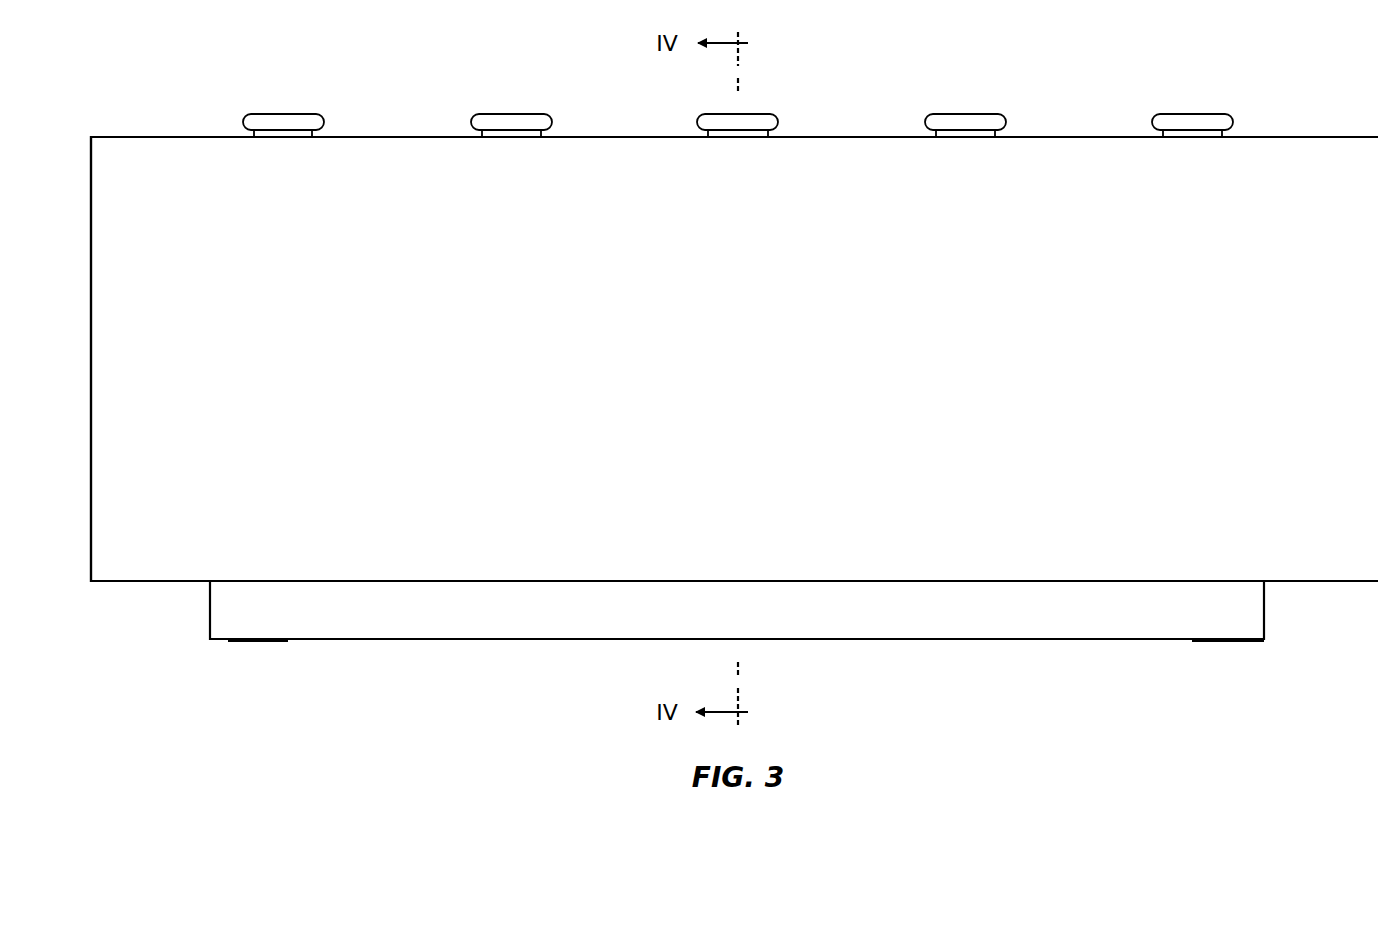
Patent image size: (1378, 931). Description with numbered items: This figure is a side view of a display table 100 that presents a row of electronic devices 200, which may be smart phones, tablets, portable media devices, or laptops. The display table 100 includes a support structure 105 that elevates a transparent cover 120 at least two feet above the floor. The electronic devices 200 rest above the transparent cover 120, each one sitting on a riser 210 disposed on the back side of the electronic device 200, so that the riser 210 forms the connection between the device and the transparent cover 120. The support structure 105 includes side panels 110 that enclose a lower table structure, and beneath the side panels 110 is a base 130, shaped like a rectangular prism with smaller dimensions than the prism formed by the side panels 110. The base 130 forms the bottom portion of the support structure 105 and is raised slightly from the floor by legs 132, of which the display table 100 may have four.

The display table 100 is at (421, 98).
The support structure 105 is at (80, 283).
The side panels 110 is at (140, 556).
The transparent cover 120 is at (190, 135).
The base 130 is at (1267, 608).
The legs 132 is at (257, 645).
The electronic device 200 is at (298, 113).
The riser 210 is at (263, 133).